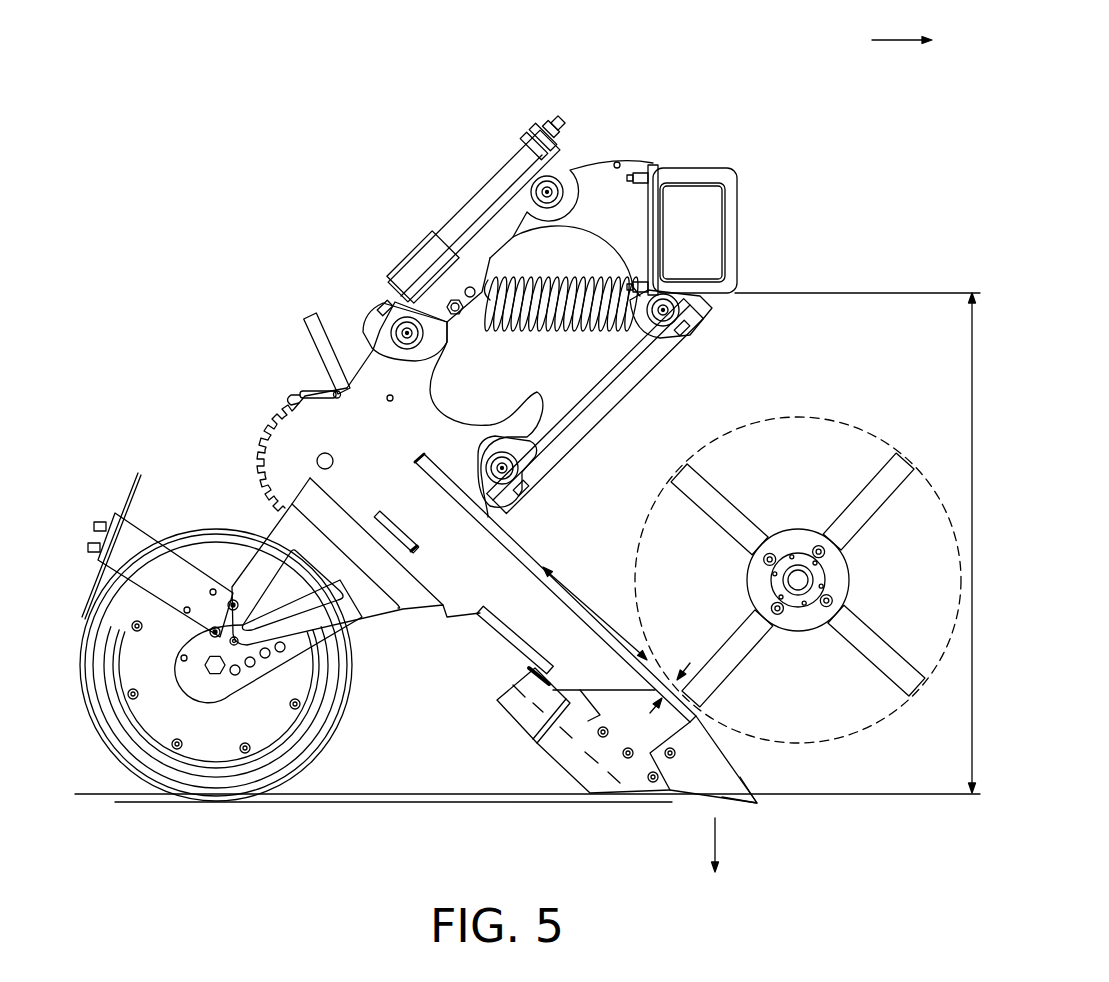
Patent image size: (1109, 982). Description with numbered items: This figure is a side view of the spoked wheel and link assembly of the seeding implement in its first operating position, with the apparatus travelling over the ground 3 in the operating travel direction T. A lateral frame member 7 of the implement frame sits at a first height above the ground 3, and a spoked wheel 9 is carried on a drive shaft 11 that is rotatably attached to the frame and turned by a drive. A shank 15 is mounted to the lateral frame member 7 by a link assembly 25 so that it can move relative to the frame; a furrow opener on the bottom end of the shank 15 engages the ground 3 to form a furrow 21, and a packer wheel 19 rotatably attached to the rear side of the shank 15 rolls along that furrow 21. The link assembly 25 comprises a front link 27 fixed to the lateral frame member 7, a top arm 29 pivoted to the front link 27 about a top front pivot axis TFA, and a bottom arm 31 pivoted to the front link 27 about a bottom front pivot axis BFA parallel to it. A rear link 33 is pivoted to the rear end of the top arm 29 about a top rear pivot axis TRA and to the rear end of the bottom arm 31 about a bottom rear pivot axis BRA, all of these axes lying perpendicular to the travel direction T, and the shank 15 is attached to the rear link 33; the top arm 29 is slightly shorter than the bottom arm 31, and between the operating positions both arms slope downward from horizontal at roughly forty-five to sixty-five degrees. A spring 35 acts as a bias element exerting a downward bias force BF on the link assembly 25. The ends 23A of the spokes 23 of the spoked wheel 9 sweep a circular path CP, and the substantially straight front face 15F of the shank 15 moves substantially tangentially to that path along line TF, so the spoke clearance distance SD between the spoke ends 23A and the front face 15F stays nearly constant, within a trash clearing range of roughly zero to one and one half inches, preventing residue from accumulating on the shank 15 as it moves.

The ground 3 is at (105, 793).
The lateral frame member 7 is at (733, 185).
The spoked wheel 9 is at (865, 576).
The drive shaft 11 is at (798, 586).
The shank 15 is at (487, 616).
The front face of shank 15F is at (690, 697).
The packer wheel 19 is at (337, 730).
The furrow 21 is at (440, 803).
The spokes 23 is at (798, 548).
The ends of the spokes 23A is at (678, 462).
The link assembly 25 is at (540, 285).
The front link 27 is at (642, 162).
The top arm 29 is at (470, 200).
The bottom arm 31 is at (612, 398).
The rear link 33 is at (430, 394).
The spring 35 is at (515, 323).
The top front pivot axis TFA is at (556, 176).
The top rear pivot axis TRA is at (390, 330).
The bottom front pivot axis BFA is at (690, 308).
The bottom rear pivot axis BRA is at (507, 468).
The circular path CP is at (782, 418).
The line of tangential movement TF is at (594, 612).
The spoke clearance distance SD is at (680, 672).
The downward bias force BF is at (716, 861).
The operating travel direction T is at (902, 26).